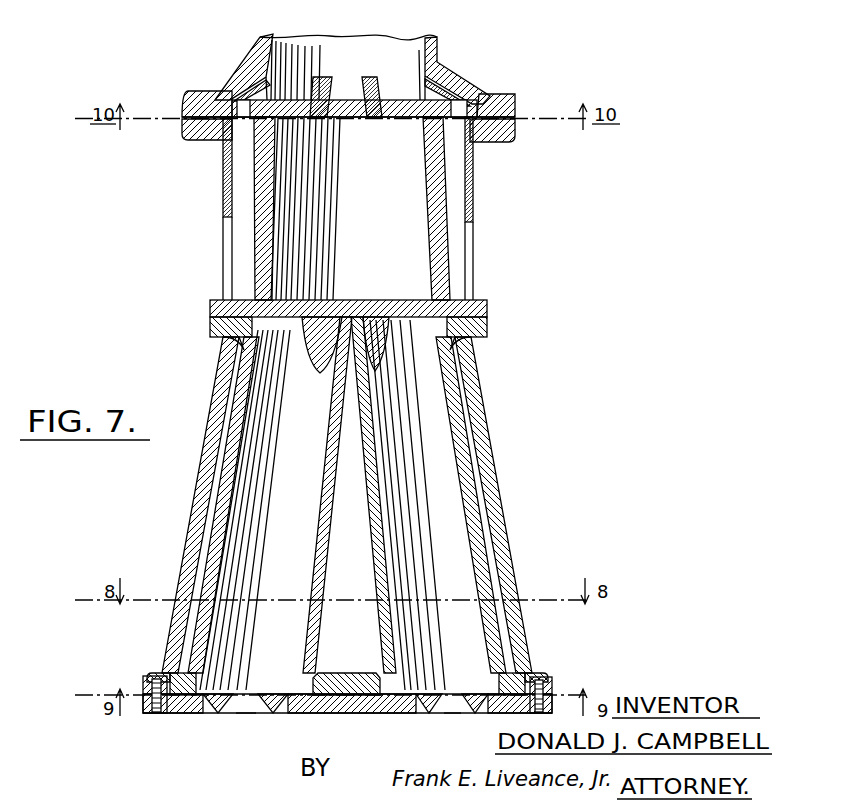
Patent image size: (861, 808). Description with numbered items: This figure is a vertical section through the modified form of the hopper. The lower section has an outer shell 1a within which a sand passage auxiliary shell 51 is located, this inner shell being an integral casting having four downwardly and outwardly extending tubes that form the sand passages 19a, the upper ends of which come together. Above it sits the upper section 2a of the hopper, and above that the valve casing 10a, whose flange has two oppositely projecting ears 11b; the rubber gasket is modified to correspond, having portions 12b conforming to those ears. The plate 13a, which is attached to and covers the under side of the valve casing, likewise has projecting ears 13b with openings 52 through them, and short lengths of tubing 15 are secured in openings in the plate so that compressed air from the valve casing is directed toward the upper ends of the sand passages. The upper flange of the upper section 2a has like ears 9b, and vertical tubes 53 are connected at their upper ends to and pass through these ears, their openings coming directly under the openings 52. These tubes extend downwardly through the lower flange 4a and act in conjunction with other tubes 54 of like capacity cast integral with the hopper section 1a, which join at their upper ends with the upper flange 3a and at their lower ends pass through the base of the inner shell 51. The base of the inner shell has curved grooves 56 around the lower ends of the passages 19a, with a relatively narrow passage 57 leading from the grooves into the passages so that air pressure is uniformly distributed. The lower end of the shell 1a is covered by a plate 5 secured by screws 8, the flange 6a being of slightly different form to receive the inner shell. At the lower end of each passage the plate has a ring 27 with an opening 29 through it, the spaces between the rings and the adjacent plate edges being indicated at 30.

The outer shell 1a is at (487, 463).
The upper section 2a is at (437, 262).
The upper flange 3a is at (488, 329).
The lower flange 4a is at (488, 304).
The plate 5 is at (351, 714).
The flange 6a is at (548, 680).
The securing screws 8 is at (153, 713).
The ears 9b is at (193, 141).
The valve casing 10a is at (437, 48).
The ears 11b is at (196, 92).
The gasket portions 12b is at (518, 107).
The plate 13a is at (398, 112).
The ears 13b is at (458, 110).
The tubing 15 is at (362, 89).
The sand passages 19a is at (278, 478).
The ring 27 is at (264, 712).
The opening 29 is at (243, 708).
The spaces 30 is at (210, 713).
The sand passage auxiliary shell 51 is at (477, 511).
The openings 52 is at (243, 107).
The vertical tubes 53 is at (230, 225).
The tubes 54 is at (226, 346).
The curved grooves 56 is at (175, 672).
The narrow passage 57 is at (238, 694).